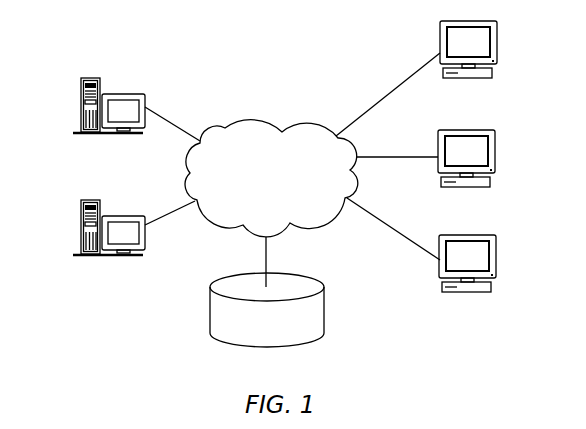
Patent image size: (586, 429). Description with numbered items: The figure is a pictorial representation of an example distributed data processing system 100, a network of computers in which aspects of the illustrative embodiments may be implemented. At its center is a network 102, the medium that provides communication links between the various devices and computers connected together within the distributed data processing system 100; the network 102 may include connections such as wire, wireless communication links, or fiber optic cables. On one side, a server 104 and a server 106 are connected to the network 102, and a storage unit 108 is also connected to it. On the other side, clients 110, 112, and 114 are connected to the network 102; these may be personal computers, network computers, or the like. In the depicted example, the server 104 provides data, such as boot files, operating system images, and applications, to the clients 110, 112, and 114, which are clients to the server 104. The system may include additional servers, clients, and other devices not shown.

The distributed data processing system 100 is at (336, 51).
The network 102 is at (254, 120).
The server 104 is at (80, 103).
The server 106 is at (80, 230).
The storage unit 108 is at (210, 308).
The client 110 is at (497, 47).
The client 112 is at (495, 156).
The client 114 is at (497, 262).